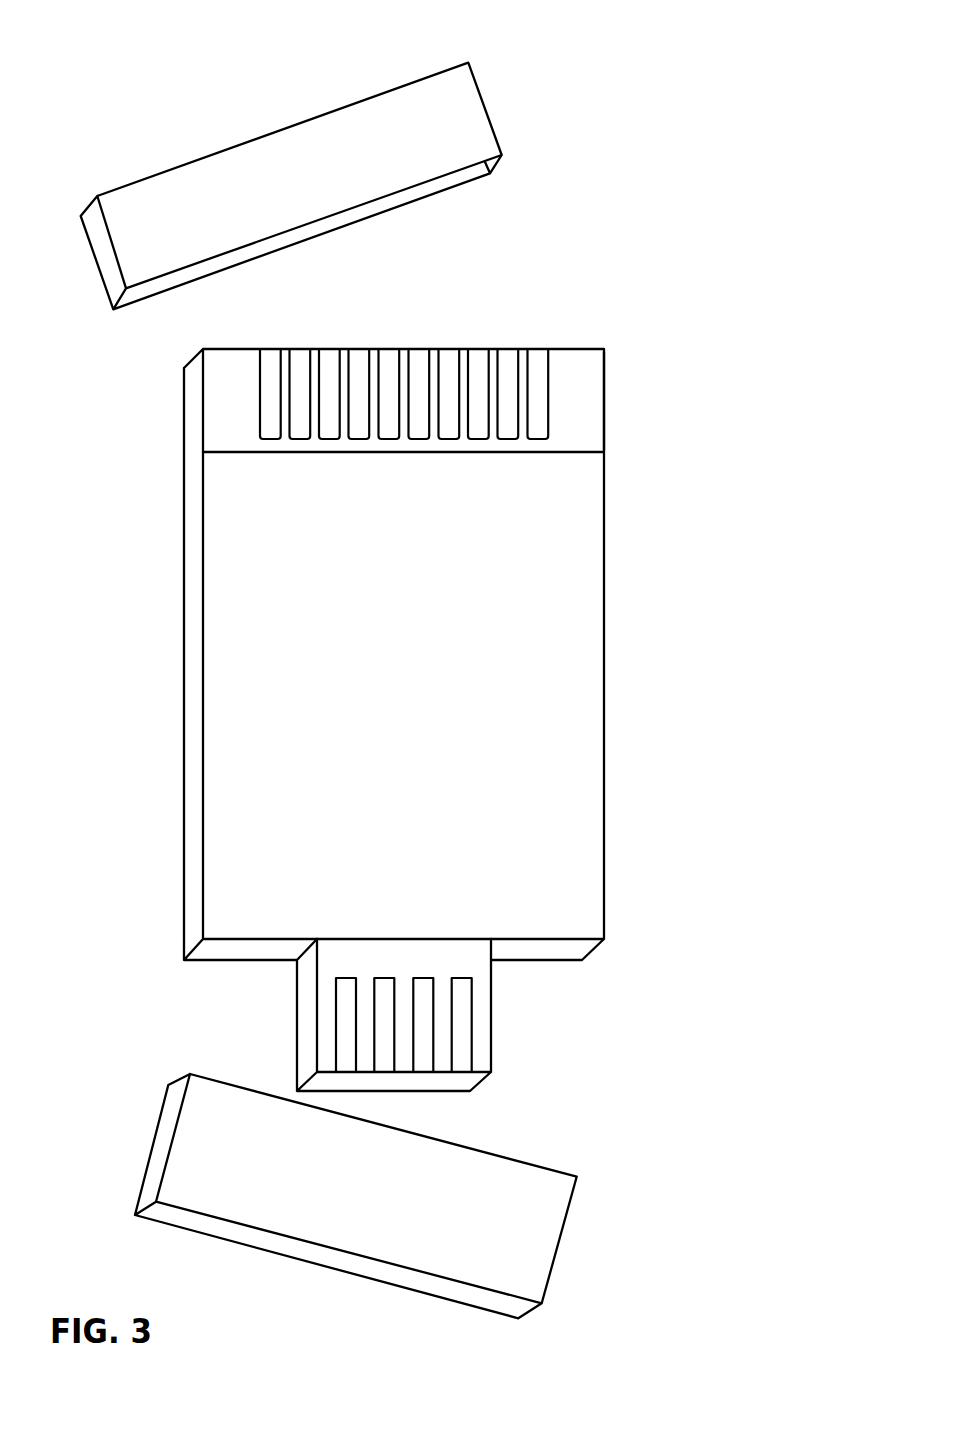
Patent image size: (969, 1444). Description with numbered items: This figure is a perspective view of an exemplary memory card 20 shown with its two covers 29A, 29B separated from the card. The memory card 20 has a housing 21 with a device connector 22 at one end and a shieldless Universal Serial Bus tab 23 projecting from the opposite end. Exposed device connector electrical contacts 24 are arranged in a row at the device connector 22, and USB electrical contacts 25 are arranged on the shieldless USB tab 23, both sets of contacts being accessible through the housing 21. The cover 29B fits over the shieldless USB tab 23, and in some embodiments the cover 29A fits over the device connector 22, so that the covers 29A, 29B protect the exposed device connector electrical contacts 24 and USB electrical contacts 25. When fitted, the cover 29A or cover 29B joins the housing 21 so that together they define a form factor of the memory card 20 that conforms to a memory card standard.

The memory card 20 is at (771, 54).
The housing 21 is at (195, 567).
The device connector 22 is at (595, 428).
The shieldless USB tab 23 is at (477, 948).
The device connector electrical contacts 24 is at (548, 347).
The USB electrical contacts 25 is at (469, 970).
The cover 29A is at (477, 117).
The cover 29B is at (558, 1178).